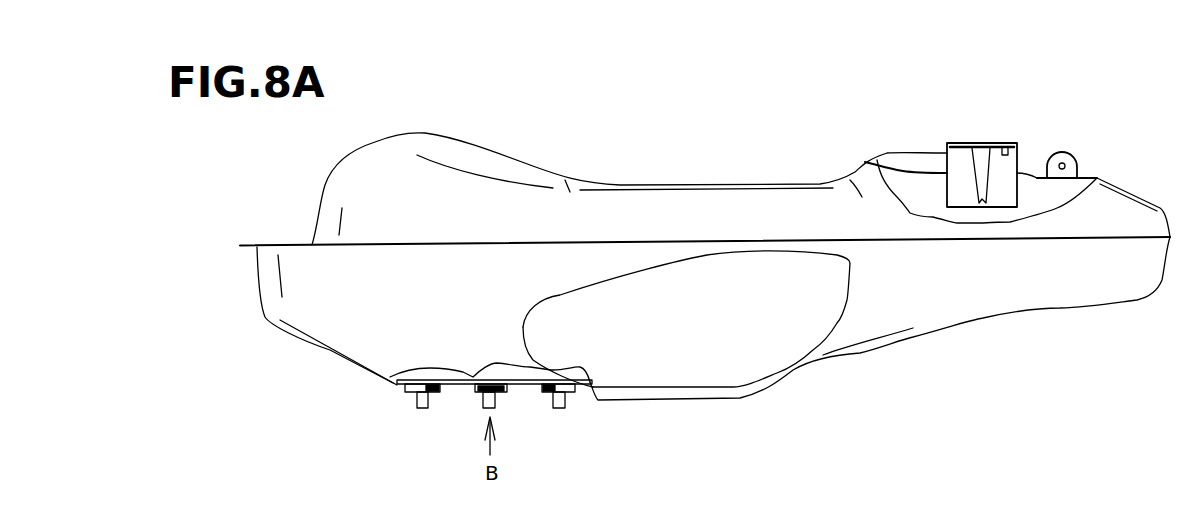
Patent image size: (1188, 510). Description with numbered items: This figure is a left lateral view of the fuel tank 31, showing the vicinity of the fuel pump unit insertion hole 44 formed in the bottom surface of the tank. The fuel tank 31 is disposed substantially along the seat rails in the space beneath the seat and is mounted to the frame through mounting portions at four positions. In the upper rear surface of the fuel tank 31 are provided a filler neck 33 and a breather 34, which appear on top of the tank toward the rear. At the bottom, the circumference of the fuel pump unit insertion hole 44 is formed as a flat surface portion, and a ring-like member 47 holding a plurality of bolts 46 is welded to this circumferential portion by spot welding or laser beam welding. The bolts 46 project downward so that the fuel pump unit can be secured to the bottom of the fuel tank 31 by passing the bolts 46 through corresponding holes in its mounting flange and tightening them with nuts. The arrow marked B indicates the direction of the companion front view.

The fuel tank 31 is at (590, 155).
The filler neck 33 is at (985, 142).
The breather 34 is at (1063, 152).
The fuel pump unit insertion hole 44 is at (477, 377).
The bolts 46 is at (413, 400).
The ring-like member 47 is at (568, 394).